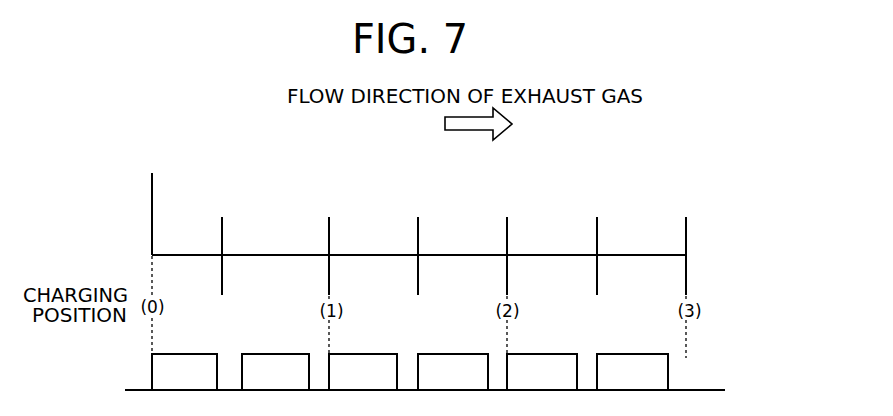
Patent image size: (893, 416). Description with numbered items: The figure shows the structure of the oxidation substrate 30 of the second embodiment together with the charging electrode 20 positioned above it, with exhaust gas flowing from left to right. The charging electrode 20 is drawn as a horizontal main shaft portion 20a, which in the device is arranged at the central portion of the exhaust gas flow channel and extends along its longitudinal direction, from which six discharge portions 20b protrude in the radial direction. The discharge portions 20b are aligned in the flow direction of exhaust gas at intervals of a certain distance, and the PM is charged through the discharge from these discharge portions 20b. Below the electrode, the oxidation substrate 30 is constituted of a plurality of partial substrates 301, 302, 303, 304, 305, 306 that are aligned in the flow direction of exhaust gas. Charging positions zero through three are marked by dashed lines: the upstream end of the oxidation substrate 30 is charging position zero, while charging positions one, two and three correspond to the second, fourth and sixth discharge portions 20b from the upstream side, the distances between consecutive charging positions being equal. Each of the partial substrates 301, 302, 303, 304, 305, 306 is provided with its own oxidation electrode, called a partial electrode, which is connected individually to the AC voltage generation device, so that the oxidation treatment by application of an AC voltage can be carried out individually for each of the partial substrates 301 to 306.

The charging electrode 20 is at (178, 153).
The main shaft portion 20a is at (185, 254).
The discharge portions 20b is at (223, 216).
The oxidation substrate 30 is at (715, 293).
The partial substrate 301 is at (192, 354).
The partial substrate 302 is at (282, 354).
The partial substrate 303 is at (370, 354).
The partial substrate 304 is at (454, 354).
The partial substrate 305 is at (543, 354).
The partial substrate 306 is at (630, 355).